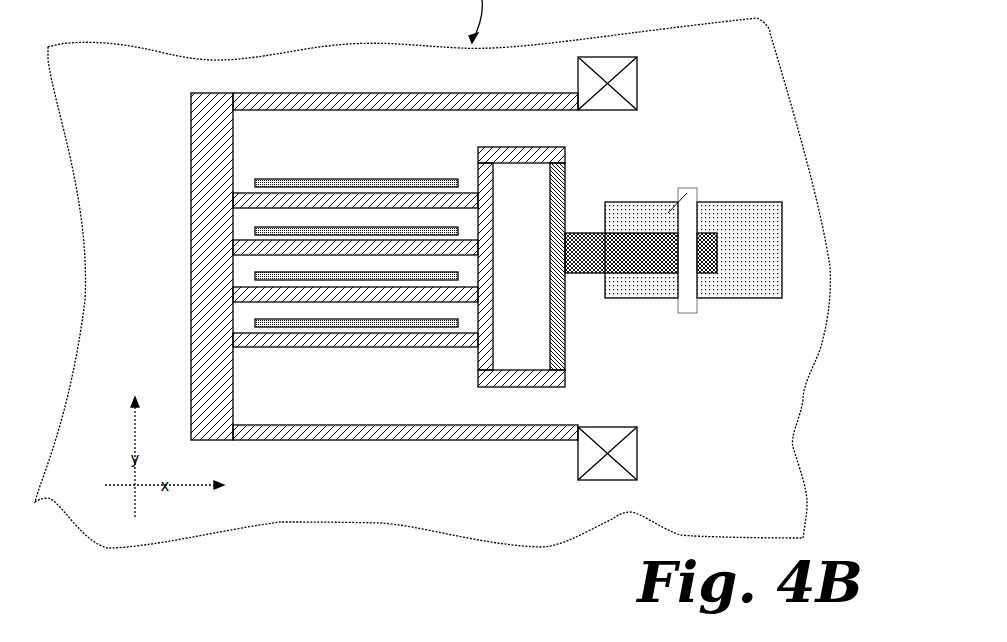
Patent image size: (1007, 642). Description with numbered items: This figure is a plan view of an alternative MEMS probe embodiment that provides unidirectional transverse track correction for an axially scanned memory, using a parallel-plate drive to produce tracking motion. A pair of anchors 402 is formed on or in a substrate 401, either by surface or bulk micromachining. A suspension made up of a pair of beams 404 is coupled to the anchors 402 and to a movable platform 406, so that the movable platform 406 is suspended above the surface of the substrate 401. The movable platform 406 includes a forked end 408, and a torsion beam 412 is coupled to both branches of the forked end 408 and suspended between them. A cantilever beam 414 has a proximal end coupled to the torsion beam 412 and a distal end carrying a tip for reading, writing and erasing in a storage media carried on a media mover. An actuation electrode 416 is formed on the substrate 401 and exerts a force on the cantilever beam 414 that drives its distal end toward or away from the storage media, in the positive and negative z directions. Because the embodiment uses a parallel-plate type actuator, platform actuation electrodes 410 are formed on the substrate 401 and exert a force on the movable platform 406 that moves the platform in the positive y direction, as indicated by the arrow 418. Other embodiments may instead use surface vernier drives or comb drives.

The substrate 401 is at (262, 63).
The anchors 402 is at (638, 102).
The beams 404 is at (278, 104).
The movable platform 406 is at (203, 264).
The forked end 408 is at (566, 151).
The platform actuation electrodes 410 is at (353, 240).
The torsion beam 412 is at (552, 280).
The cantilever beam 414 is at (660, 260).
The actuation electrode 416 is at (773, 267).
The arrow 418 is at (682, 250).